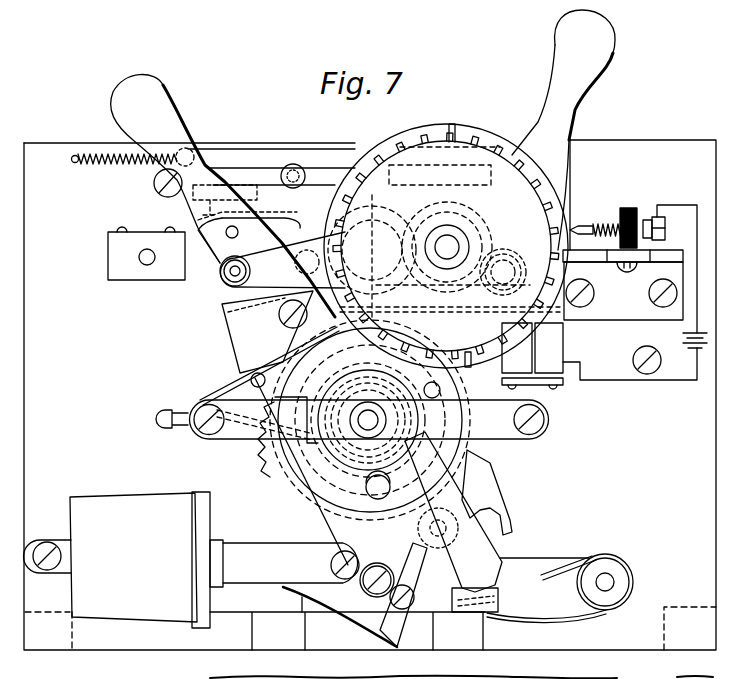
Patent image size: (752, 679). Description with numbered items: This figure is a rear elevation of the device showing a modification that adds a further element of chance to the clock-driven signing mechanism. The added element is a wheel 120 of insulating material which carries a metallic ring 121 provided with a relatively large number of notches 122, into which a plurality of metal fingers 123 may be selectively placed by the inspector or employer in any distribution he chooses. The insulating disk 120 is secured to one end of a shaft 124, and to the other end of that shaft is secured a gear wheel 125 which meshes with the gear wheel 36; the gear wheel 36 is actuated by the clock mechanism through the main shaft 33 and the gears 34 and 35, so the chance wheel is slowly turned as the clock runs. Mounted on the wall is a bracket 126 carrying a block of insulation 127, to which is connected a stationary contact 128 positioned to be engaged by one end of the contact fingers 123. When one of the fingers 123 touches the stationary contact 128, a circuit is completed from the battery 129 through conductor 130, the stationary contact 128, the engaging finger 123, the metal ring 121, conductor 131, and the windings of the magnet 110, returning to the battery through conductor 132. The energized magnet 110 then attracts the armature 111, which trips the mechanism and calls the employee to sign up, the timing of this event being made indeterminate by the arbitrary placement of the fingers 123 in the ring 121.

The main shaft 33 is at (364, 425).
The gear 34 is at (364, 420).
The gear 35 is at (345, 431).
The gear wheel 36 is at (333, 226).
The magnet 110 is at (565, 362).
The armature 111 is at (574, 286).
The wheel of insulating material 120 is at (411, 140).
The metallic ring 121 is at (486, 146).
The notches 122 is at (372, 172).
The metal fingers 123 is at (452, 124).
The shaft 124 is at (452, 246).
The gear wheel 125 is at (440, 183).
The bracket 126 is at (623, 285).
The block of insulation 127 is at (635, 208).
The stationary contact 128 is at (575, 228).
The battery 129 is at (683, 338).
The conductor 130 is at (686, 200).
The conductor 131 is at (496, 368).
The conductor 132 is at (666, 380).